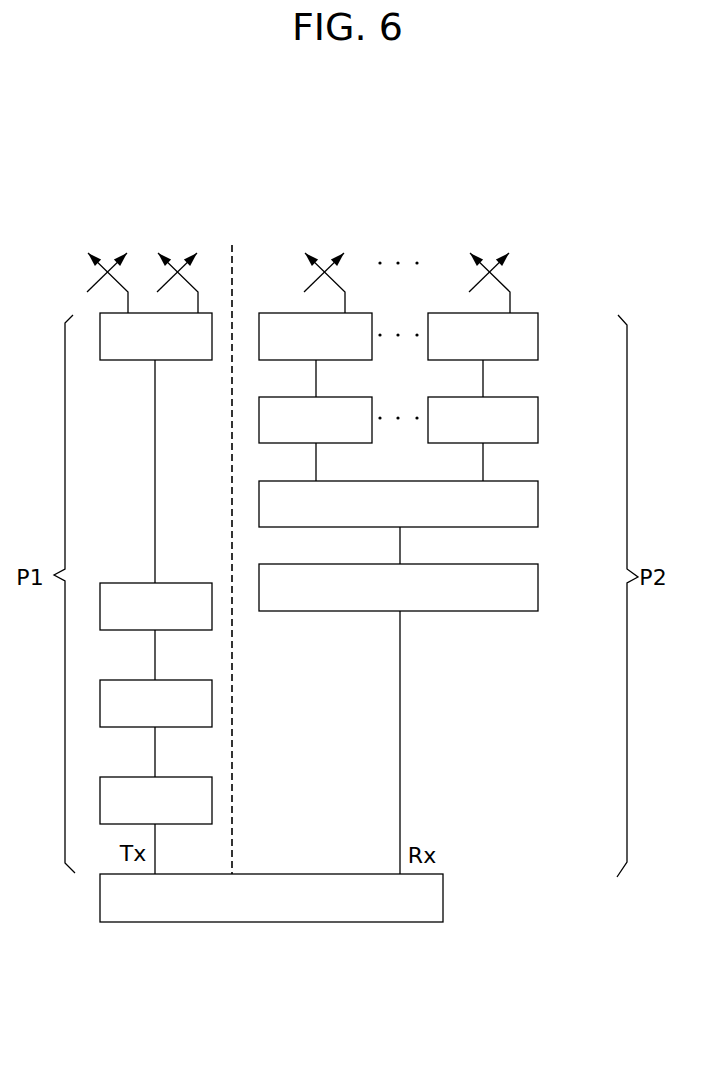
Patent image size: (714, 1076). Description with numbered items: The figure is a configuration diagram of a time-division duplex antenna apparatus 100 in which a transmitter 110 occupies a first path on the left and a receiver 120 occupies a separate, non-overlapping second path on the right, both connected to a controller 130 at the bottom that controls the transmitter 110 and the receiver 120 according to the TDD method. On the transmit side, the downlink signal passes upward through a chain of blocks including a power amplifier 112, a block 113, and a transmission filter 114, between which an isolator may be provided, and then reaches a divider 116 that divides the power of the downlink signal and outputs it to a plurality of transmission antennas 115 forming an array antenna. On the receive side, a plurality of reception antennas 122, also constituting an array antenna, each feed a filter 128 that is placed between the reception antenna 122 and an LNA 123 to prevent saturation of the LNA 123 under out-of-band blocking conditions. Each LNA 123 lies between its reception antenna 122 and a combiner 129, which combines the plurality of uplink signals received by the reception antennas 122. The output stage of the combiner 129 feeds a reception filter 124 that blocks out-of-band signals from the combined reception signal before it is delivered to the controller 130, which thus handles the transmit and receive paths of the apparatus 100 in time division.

The TDD antenna apparatus 100 is at (468, 162).
The transmitter 110 is at (172, 220).
The power amplifier 112 is at (177, 776).
The power amplifier 113 is at (177, 678).
The transmission filter 114 is at (175, 582).
The transmission antenna 115 is at (173, 277).
The divider 116 is at (177, 360).
The receiver 120 is at (490, 225).
The reception antenna 122 is at (315, 277).
The LNA 123 is at (258, 422).
The reception filter 124 is at (538, 587).
The filter 128 is at (283, 312).
The combiner 129 is at (538, 503).
The controller 130 is at (443, 897).